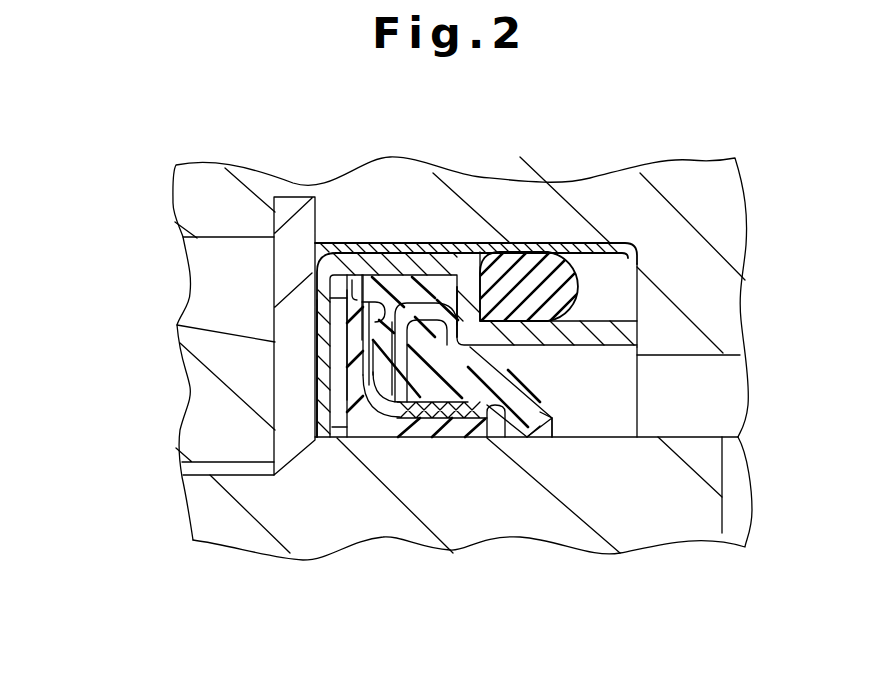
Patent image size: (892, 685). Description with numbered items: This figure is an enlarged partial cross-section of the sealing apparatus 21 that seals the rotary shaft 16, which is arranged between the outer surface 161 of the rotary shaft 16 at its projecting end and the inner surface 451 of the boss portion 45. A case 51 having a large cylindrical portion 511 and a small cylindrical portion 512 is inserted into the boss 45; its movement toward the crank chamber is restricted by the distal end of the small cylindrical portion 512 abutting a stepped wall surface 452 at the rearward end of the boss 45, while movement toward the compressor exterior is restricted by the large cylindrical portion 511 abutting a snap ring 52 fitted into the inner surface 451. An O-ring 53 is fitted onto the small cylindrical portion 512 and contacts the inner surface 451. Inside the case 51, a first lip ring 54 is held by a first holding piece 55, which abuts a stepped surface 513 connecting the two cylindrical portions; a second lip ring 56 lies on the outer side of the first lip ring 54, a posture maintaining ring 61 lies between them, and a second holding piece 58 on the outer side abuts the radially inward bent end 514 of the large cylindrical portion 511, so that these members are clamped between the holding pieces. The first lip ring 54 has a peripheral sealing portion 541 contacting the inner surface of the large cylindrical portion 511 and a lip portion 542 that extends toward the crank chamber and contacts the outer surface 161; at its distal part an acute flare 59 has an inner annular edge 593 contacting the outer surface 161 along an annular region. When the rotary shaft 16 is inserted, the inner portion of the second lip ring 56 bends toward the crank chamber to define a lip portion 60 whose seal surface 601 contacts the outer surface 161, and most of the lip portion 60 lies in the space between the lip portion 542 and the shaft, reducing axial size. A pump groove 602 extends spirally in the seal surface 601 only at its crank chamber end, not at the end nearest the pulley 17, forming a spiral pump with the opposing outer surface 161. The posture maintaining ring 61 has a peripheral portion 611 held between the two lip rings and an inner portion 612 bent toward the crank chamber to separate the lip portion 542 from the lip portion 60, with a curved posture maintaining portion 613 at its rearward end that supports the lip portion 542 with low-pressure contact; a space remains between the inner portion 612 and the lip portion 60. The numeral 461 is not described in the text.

The rotary shaft 16 is at (224, 533).
The outer surface of the rotary shaft 161 is at (677, 434).
The pulley 17 is at (185, 437).
The sealing apparatus 21 is at (385, 178).
The boss portion 45 is at (197, 183).
The inner surface of the boss portion 451 is at (192, 237).
The stepped wall surface 452 is at (627, 262).
The shaft end face 461 is at (723, 522).
The case 51 is at (472, 250).
The large cylindrical portion 511 is at (352, 262).
The small cylindrical portion 512 is at (632, 357).
The stepped surface 513 is at (445, 294).
The end of the large cylindrical portion 514 is at (327, 267).
The snap ring 52 is at (290, 203).
The O-ring 53 is at (520, 250).
The first lip ring 54 is at (485, 375).
The peripheral sealing portion 541 is at (395, 262).
The lip portion 542 is at (495, 440).
The first holding piece 55 is at (436, 262).
The second lip ring 56 is at (315, 440).
The second holding piece 58 is at (335, 306).
The acute flare 59 is at (545, 415).
The inner annular edge 593 is at (538, 463).
The lip portion 60 is at (370, 440).
The seal surface 601 is at (398, 440).
The pump groove 602 is at (475, 440).
The posture maintaining ring 61 is at (347, 400).
The peripheral portion 611 is at (340, 352).
The inner portion 612 is at (385, 445).
The posture maintaining portion 613 is at (547, 410).